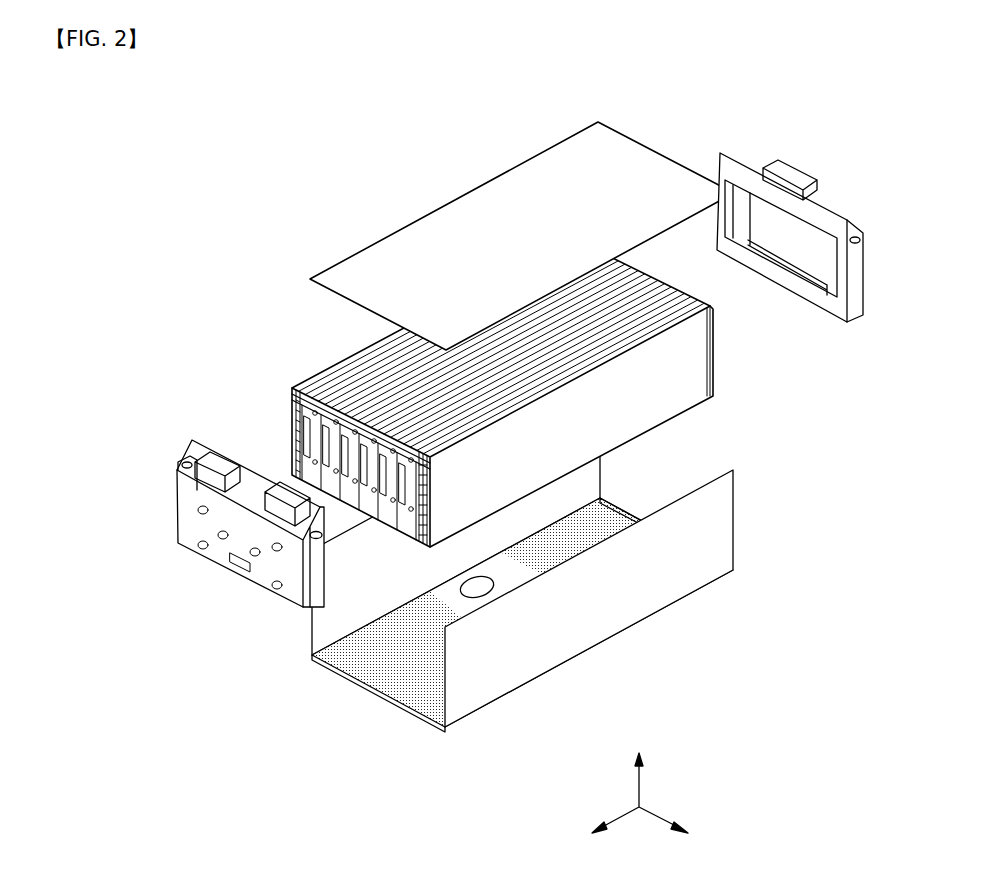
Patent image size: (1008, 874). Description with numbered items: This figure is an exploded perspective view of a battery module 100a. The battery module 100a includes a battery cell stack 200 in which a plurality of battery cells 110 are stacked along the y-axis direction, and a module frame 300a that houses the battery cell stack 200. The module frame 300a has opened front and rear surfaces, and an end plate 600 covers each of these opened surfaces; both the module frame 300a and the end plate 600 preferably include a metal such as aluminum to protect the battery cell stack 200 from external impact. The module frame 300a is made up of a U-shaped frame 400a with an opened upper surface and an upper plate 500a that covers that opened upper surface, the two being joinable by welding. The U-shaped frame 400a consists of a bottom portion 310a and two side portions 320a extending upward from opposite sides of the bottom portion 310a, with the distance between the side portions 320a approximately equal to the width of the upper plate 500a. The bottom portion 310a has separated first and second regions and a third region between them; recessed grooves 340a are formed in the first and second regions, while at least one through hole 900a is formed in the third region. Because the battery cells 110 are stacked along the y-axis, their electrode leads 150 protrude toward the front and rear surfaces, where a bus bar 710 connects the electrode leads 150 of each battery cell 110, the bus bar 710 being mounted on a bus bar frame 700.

The battery module 100a is at (270, 120).
The battery cell stack 200 is at (511, 440).
The battery cells 110 is at (590, 352).
The electrode leads 150 is at (407, 502).
The bus bar frame 700 is at (278, 406).
The bus bar 710 is at (297, 442).
The module frame 300a is at (833, 673).
The U-shaped frame 400a is at (205, 647).
The bottom portion 310a is at (470, 607).
The side portions 320a is at (340, 669).
The recessed grooves 340a is at (620, 507).
The through hole 900a is at (490, 590).
The upper plate 500a is at (466, 216).
The end plate 600 is at (746, 165).